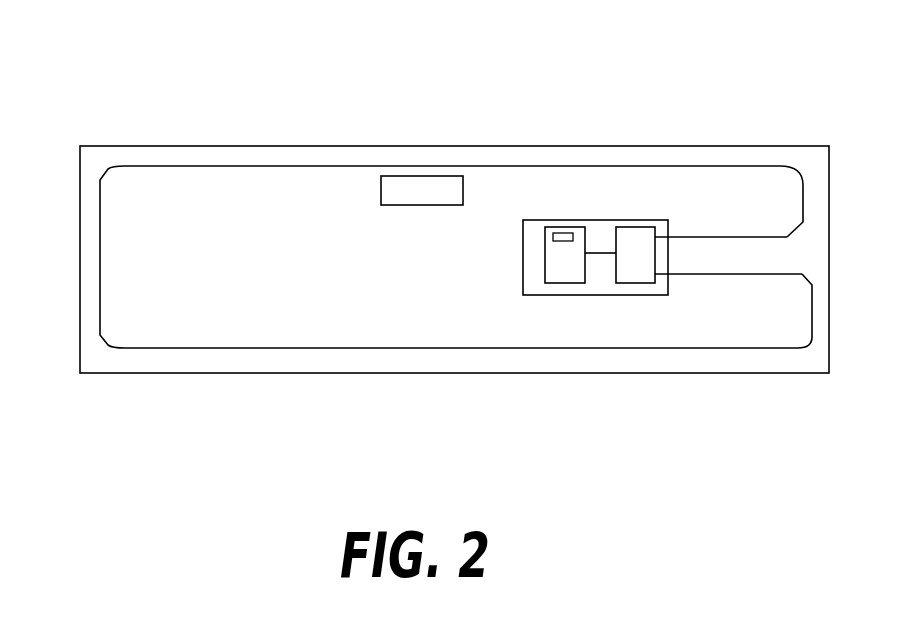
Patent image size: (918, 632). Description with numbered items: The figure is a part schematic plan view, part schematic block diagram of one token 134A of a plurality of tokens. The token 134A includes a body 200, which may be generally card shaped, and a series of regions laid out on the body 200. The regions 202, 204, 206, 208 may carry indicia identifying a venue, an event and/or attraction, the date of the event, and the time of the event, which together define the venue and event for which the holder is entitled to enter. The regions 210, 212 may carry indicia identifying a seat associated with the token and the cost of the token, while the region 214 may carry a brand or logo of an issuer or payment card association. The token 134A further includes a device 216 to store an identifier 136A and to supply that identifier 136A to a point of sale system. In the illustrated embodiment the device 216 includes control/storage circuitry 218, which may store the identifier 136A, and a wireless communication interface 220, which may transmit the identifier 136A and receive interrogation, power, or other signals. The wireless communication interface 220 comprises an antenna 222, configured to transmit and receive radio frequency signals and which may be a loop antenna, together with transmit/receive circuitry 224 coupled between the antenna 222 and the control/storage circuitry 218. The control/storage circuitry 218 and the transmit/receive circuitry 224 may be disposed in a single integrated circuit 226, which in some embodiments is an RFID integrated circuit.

The token 134A is at (794, 66).
The body 200 is at (631, 146).
The region 202 is at (317, 306).
The region 204 is at (318, 262).
The region 206 is at (117, 192).
The region 208 is at (117, 229).
The region 210 is at (117, 264).
The region 212 is at (117, 303).
The region 214 is at (422, 190).
The device 216 is at (804, 252).
The control/storage circuitry 218 is at (559, 283).
The wireless communication interface 220 is at (664, 264).
The antenna 222 is at (743, 166).
The transmit/receive circuitry 224 is at (636, 283).
The single integrated circuit 226 is at (523, 256).
The identifier 136A is at (576, 238).